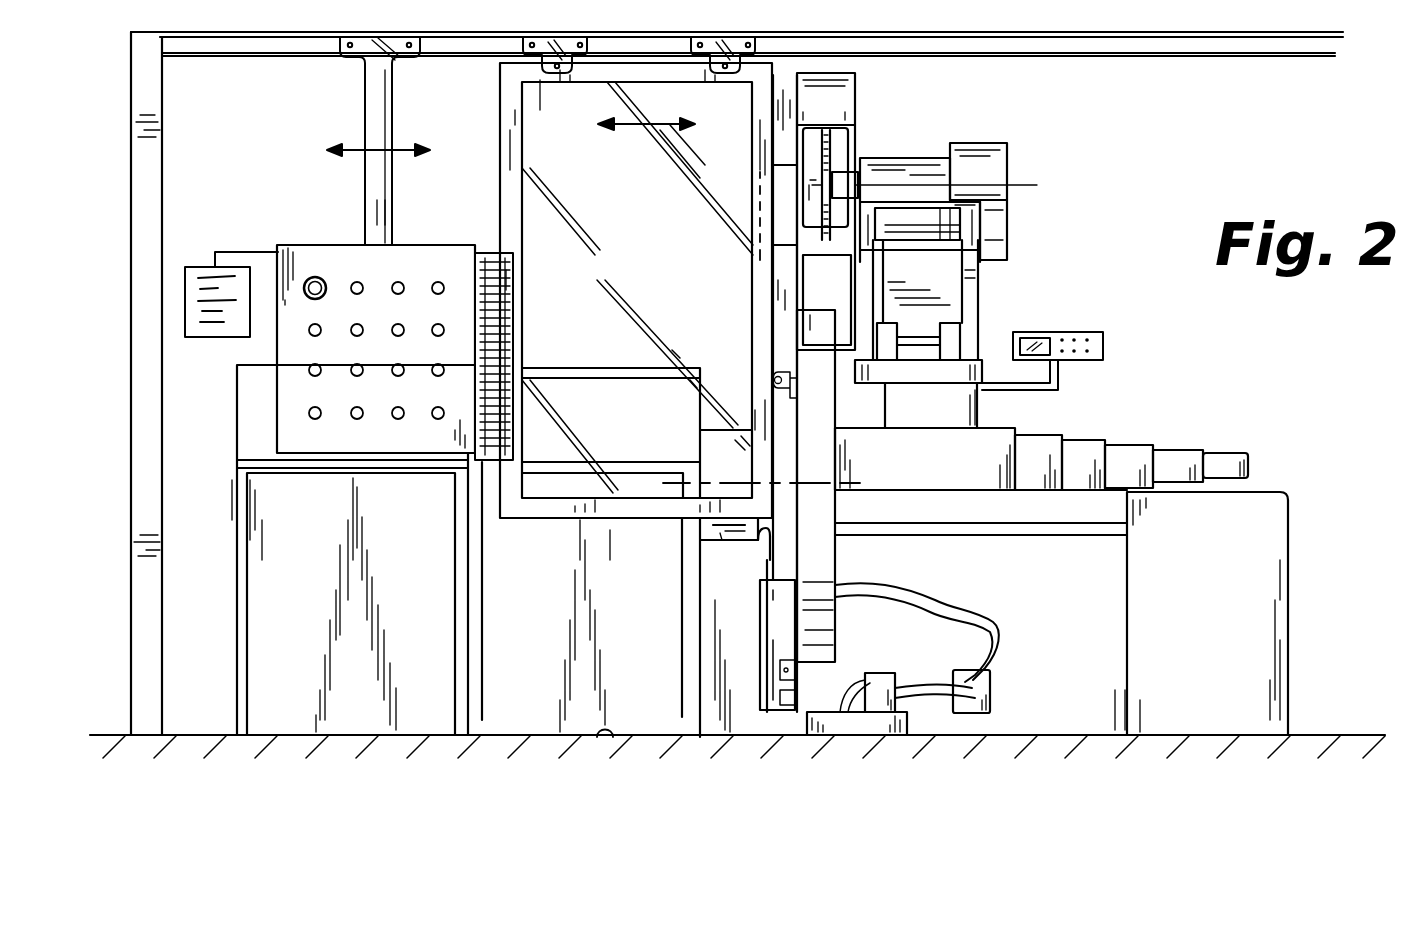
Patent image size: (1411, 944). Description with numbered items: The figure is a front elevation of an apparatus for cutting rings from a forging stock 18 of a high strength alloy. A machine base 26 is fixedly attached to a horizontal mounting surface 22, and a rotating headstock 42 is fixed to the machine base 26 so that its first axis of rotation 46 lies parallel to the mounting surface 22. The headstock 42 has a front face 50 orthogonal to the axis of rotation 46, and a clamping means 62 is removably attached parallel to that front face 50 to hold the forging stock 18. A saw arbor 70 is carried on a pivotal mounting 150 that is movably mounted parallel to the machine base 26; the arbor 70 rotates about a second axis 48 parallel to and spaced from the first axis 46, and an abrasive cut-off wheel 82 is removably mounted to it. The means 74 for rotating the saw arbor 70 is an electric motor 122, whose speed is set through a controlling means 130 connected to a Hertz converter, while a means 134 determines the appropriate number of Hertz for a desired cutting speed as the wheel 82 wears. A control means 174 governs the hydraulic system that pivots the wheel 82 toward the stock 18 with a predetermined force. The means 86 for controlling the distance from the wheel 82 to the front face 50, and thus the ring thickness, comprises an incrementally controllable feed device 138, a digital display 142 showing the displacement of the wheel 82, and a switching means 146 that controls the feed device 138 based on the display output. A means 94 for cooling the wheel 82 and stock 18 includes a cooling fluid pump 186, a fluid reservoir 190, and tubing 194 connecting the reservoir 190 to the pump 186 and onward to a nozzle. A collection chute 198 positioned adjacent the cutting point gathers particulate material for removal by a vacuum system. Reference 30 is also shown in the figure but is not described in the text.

The forging stock 18 is at (824, 570).
The horizontal mounting surface 22 is at (546, 737).
The machine base 26 is at (661, 717).
The floor mount 30 is at (604, 742).
The rotating headstock 42 is at (713, 524).
The first axis of rotation 46 is at (762, 560).
The second axis 48 is at (1037, 185).
The front face 50 is at (762, 553).
The clamping means 62 is at (776, 712).
The saw arbor 70 is at (810, 183).
The means for rotating the saw arbor 74 is at (782, 208).
The abrasive cut-off wheel 82 is at (774, 280).
The means for controlling the distance 86 is at (1000, 490).
The means for cooling 94 is at (1000, 620).
The electric motor 122 is at (782, 195).
The controlling means 130 is at (393, 286).
The means for determining an appropriate number of Hertz 134 is at (195, 265).
The incrementally controllable feed device 138 is at (1047, 445).
The digital display 142 is at (1104, 345).
The switching means 146 is at (438, 283).
The pivotal mounting 150 is at (958, 330).
The control means 174 is at (306, 282).
The cooling fluid pump 186 is at (894, 675).
The fluid reservoir 190 is at (888, 736).
The tubing 194 is at (935, 695).
The collection chute 198 is at (835, 272).